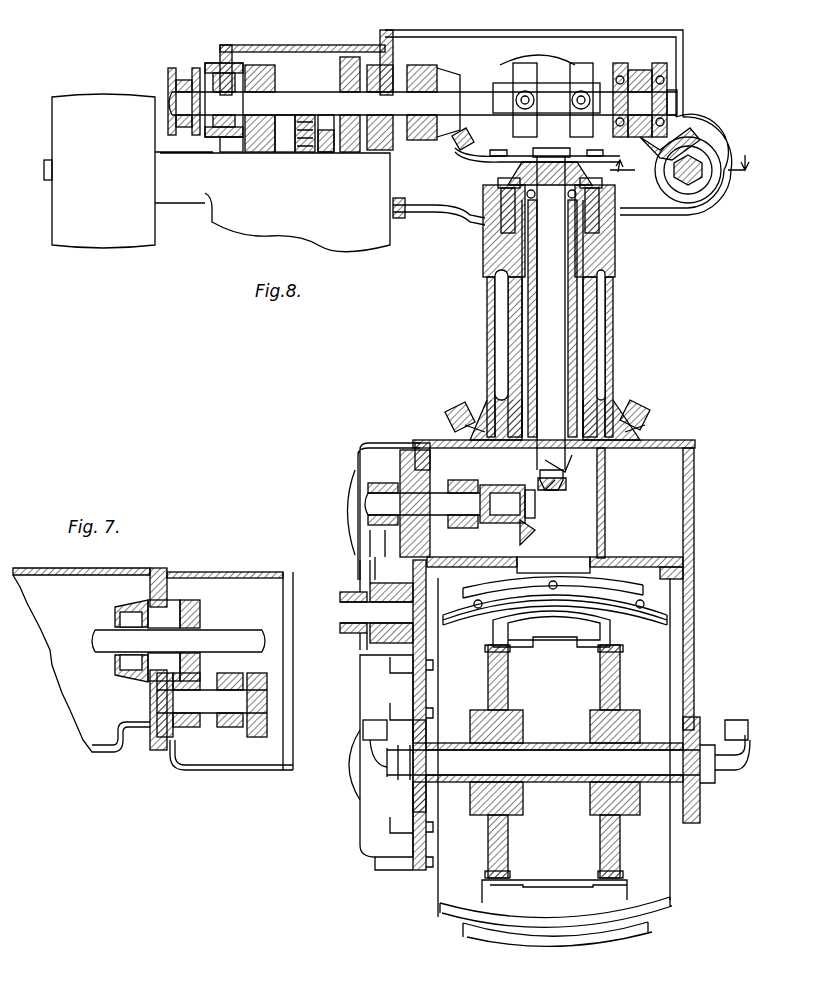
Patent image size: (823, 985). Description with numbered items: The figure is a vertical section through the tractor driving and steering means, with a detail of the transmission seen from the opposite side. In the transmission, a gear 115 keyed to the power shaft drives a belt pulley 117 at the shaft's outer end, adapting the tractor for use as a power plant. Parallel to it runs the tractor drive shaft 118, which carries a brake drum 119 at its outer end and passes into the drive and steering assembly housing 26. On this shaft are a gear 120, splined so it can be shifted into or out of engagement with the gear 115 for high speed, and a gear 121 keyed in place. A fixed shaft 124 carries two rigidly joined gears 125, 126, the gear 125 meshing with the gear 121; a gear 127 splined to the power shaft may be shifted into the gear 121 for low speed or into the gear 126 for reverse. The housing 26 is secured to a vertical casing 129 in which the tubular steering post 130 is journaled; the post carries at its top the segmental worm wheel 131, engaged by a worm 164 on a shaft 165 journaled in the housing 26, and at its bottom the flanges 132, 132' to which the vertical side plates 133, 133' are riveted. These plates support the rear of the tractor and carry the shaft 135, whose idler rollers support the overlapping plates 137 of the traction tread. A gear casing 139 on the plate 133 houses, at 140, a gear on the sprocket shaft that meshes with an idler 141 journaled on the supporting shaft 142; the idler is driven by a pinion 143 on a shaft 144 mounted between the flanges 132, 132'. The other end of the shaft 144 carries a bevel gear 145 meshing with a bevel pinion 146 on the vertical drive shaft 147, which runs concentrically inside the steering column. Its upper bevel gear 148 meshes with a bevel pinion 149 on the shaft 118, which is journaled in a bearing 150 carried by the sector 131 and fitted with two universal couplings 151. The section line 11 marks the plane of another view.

In FIG. 8, the tractor drive and steering assembly housing 26 is at (688, 40).
In FIG. 8, the section line 11 is at (686, 152).
In FIG. 8, the gear 115 is at (262, 152).
In FIG. 8, the belt pulley 117 is at (142, 248).
In FIG. 8, the tractor drive shaft 118 is at (281, 92).
In FIG. 7, the tractor drive shaft 118 is at (222, 630).
In FIG. 8, the brake drum 119 is at (168, 76).
In FIG. 8, the gear 120 is at (292, 62).
In FIG. 8, the gear 121 is at (342, 70).
In FIG. 7, the gear 121 is at (205, 605).
In FIG. 7, the fixed shaft 124 is at (268, 699).
In FIG. 8, the gear 125 is at (348, 152).
In FIG. 7, the gear 125 is at (192, 727).
In FIG. 8, the gear 126 is at (290, 152).
In FIG. 7, the gear 126 is at (232, 727).
In FIG. 8, the gear 127 is at (335, 152).
In FIG. 8, the vertical casing 129 is at (613, 330).
In FIG. 8, the tubular steering post 130 is at (605, 290).
In FIG. 8, the segmental worm wheel 131 is at (672, 200).
In FIG. 8, the flange 132 is at (565, 424).
In FIG. 8, the flange 132' is at (584, 513).
In FIG. 8, the vertical side plate 133 is at (397, 732).
In FIG. 8, the vertical side plate 133' is at (595, 682).
In FIG. 8, the shaft 135 is at (705, 775).
In FIG. 8, the overlapping plates 137 is at (668, 905).
In FIG. 8, the gear casing 139 is at (362, 812).
In FIG. 8, the gear housing location 140 is at (350, 775).
In FIG. 8, the idler 141 is at (375, 565).
In FIG. 8, the supporting shaft 142 is at (340, 632).
In FIG. 8, the pinion 143 is at (358, 490).
In FIG. 8, the shaft 144 is at (385, 503).
In FIG. 8, the bevel gear 145 is at (535, 537).
In FIG. 8, the bevel pinion 146 is at (565, 478).
In FIG. 8, the vertical drive shaft 147 is at (553, 358).
In FIG. 8, the bevel gear 148 is at (475, 162).
In FIG. 8, the bevel pinion 149 is at (640, 70).
In FIG. 8, the bearing 150 is at (672, 120).
In FIG. 8, the universal couplings 151 is at (540, 60).
In FIG. 8, the worm 164 is at (708, 185).
In FIG. 8, the shaft 165 is at (700, 185).